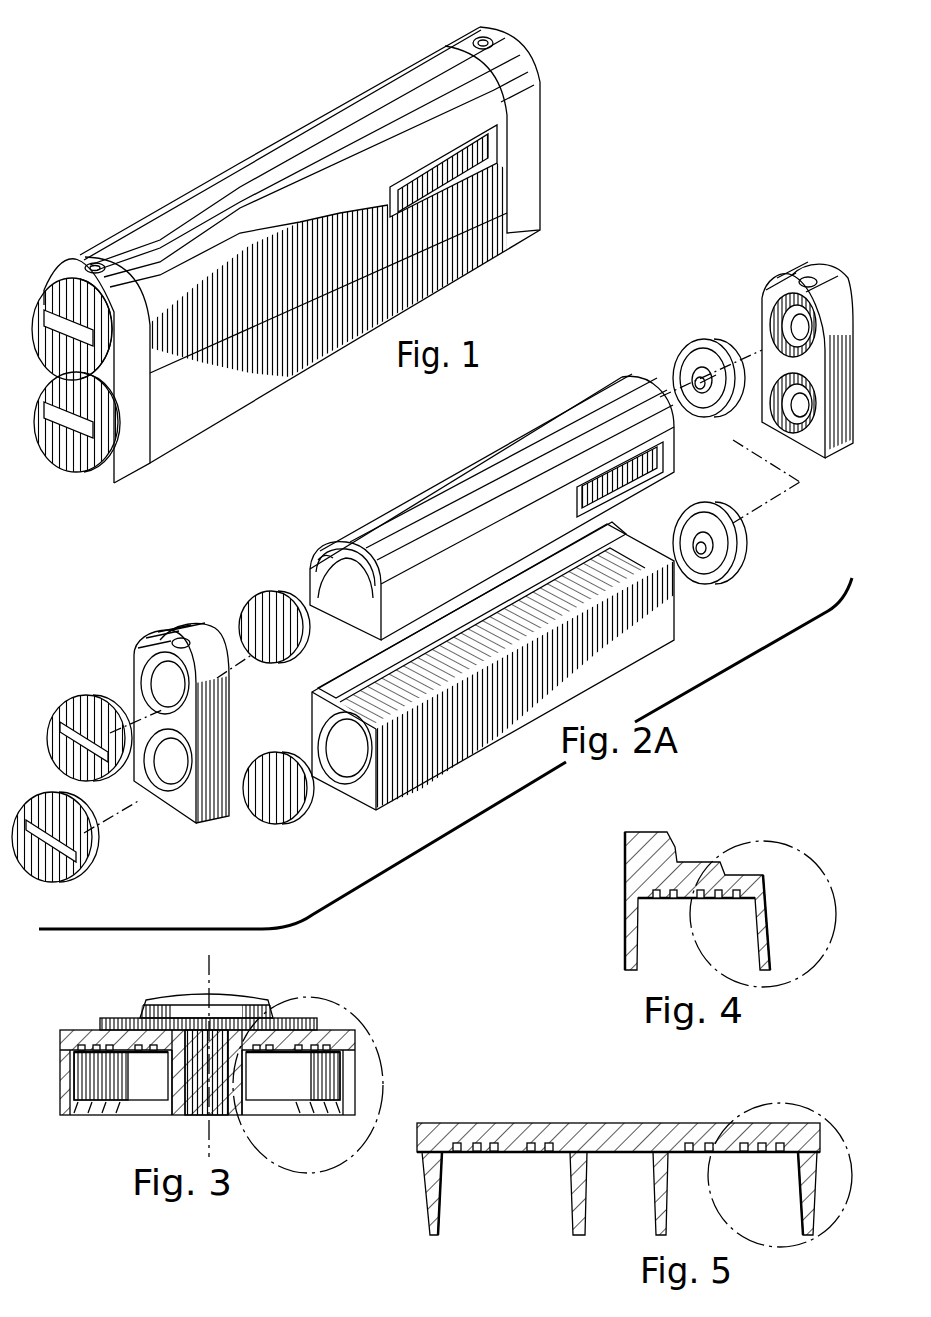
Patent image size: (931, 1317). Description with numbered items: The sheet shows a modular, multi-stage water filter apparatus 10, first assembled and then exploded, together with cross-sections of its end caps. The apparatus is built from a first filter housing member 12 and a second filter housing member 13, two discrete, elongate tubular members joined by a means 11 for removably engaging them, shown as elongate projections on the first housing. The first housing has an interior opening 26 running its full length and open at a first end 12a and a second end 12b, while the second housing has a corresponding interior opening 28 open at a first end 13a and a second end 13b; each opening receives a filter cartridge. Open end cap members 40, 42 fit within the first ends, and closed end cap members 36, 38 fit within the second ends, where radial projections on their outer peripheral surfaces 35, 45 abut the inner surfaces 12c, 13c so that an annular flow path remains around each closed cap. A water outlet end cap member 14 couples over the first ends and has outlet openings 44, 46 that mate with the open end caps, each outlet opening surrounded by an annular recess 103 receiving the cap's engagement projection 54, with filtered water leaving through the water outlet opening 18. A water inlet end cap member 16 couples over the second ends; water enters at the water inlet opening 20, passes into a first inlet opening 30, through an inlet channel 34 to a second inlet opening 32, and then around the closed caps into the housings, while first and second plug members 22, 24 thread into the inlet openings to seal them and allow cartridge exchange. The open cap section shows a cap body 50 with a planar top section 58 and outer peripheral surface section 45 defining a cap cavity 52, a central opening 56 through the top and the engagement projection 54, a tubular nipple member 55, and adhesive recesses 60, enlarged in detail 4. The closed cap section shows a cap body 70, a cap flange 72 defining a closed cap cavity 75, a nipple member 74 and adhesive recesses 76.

In FIG. 3, the detail 4 is at (352, 1020).
In FIG. 1, the modular, multi-stage water filter apparatus 10 is at (569, 110).
In FIG. 2A, the modular, multi-stage water filter apparatus 10 is at (546, 398).
In FIG. 2A, the means for removably engaging the first and second filter housing members 11 is at (322, 676).
In FIG. 1, the first filter housing member 12 is at (462, 250).
In FIG. 2A, the first filter housing member 12 is at (630, 650).
In FIG. 2A, the first end of the first filter housing member 12a is at (678, 612).
In FIG. 2A, the second end of the first filter housing member 12b is at (380, 806).
In FIG. 2A, the inner surface of the interior opening of the first filter housing member 12c is at (320, 735).
In FIG. 1, the second filter housing member 13 is at (273, 162).
In FIG. 2A, the second filter housing member 13 is at (428, 490).
In FIG. 2A, the first end of the second filter housing member 13a is at (655, 447).
In FIG. 2A, the second end of the second filter housing member 13b is at (308, 578).
In FIG. 2A, the inner surface of the interior opening of the second filter housing member 13c is at (345, 612).
In FIG. 1, the water outlet end cap member 14 is at (521, 202).
In FIG. 2A, the water outlet end cap member 14 is at (835, 460).
In FIG. 1, the water inlet end cap member 16 is at (135, 450).
In FIG. 2A, the water inlet end cap member 16 is at (214, 814).
In FIG. 1, the water outlet opening 18 is at (492, 40).
In FIG. 2A, the water outlet opening 18 is at (808, 276).
In FIG. 1, the water inlet opening 20 is at (93, 262).
In FIG. 2A, the water inlet opening 20 is at (183, 638).
In FIG. 1, the first plug member 22 is at (50, 292).
In FIG. 2A, the first plug member 22 is at (60, 700).
In FIG. 1, the second plug member 24 is at (83, 462).
In FIG. 2A, the second plug member 24 is at (60, 870).
In FIG. 2A, the interior opening of the first filter housing member 26 is at (350, 795).
In FIG. 2A, the interior opening of the second filter housing member 28 is at (324, 554).
In FIG. 2A, the first inlet opening 30 is at (150, 655).
In FIG. 2A, the second inlet opening 32 is at (178, 798).
In FIG. 2A, the inlet channel 34 is at (142, 690).
In FIG. 2A, the outer peripheral surface of the closed end cap member 35 is at (303, 800).
In FIG. 3, the outer peripheral surface of the closed end cap member 35 is at (270, 1100).
In FIG. 2A, the closed end cap member 36 is at (258, 600).
In FIG. 5, the closed end cap member 36 is at (745, 1103).
In FIG. 2A, the closed end cap member 38 is at (282, 822).
In FIG. 2A, the open end cap member 40 is at (699, 337).
In FIG. 3, the open end cap member 40 is at (303, 982).
In FIG. 2A, the open end cap member 42 is at (734, 560).
In FIG. 2A, the outlet opening 44 is at (773, 312).
In FIG. 2A, the outer peripheral surface section 45 is at (742, 545).
In FIG. 3, the outer peripheral surface section 45 is at (62, 1083).
In FIG. 2A, the outlet opening 46 is at (805, 440).
In FIG. 3, the cap body 50 is at (355, 1046).
In FIG. 3, the cap cavity 52 is at (124, 1095).
In FIG. 3, the engagement projection 54 is at (178, 994).
In FIG. 4, the engagement projection 54 is at (657, 832).
In FIG. 4, the tubular nipple member 55 is at (626, 912).
In FIG. 3, the central opening 56 is at (224, 1085).
In FIG. 3, the planar top section 58 is at (88, 1032).
In FIG. 4, the planar top section 58 is at (766, 910).
In FIG. 4, the adhesive recesses 60 is at (680, 898).
In FIG. 5, the cap body of the closed end cap member 70 is at (640, 1123).
In FIG. 5, the cap flange 72 is at (425, 1195).
In FIG. 5, the nipple member 74 is at (570, 1225).
In FIG. 5, the closed cap cavity 75 is at (540, 1180).
In FIG. 5, the adhesive recesses 76 is at (460, 1153).
In FIG. 2A, the annular recess 103 is at (770, 328).